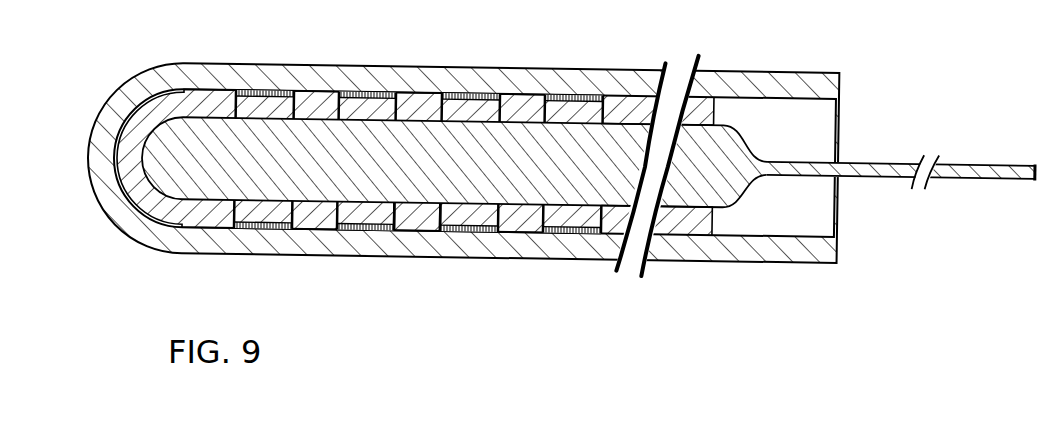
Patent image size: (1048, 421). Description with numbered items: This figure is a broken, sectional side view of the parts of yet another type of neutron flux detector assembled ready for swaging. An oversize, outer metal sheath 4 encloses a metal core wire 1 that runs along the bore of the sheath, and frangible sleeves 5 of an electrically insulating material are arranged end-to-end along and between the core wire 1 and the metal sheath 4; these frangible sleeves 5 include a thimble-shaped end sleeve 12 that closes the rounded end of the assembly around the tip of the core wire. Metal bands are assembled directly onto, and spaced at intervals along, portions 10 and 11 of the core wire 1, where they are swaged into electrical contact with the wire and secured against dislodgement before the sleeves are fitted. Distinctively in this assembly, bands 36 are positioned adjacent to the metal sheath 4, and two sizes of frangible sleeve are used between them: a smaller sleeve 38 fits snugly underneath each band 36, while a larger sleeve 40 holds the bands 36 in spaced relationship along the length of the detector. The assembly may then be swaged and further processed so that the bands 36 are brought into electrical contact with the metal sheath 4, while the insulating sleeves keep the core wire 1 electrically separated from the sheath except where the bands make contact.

The metal core wire 1 is at (307, 147).
The outer metal sheath 4 is at (310, 78).
The frangible sleeves 5 is at (248, 107).
The core wire portion 10 is at (207, 183).
The core wire portion 11 is at (899, 180).
The thimble-shaped end sleeve 12 is at (150, 203).
The bands 36 is at (347, 227).
The frangible sleeve 38 is at (472, 222).
The frangible sleeve 40 is at (412, 222).